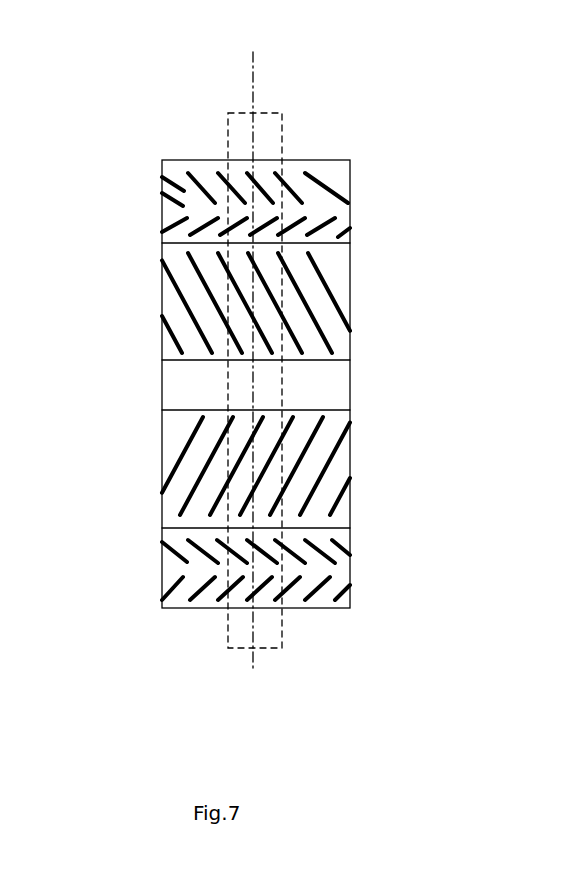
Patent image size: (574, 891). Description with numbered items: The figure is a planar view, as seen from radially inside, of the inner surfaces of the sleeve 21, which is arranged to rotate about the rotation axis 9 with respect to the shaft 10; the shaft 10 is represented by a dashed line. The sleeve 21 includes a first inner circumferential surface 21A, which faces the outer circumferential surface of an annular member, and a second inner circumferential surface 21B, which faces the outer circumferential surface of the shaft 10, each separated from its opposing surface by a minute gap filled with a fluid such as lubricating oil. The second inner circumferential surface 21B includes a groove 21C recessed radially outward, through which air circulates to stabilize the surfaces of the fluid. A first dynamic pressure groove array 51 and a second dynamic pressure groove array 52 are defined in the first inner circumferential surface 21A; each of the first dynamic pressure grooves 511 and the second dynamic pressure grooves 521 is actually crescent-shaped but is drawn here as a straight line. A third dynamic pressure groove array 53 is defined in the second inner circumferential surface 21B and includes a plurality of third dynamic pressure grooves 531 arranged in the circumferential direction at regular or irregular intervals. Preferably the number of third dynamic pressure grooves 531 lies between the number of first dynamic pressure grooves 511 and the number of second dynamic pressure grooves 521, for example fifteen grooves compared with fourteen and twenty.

The rotation axis 9 is at (257, 56).
The shaft 10 is at (237, 113).
The sleeve 21 is at (346, 158).
The first inner circumferential surface 21A is at (163, 168).
The second inner circumferential surface 21B is at (168, 303).
The groove 21C is at (165, 385).
The first dynamic pressure groove array 51 is at (349, 242).
The first dynamic pressure groove 511 is at (345, 555).
The second dynamic pressure groove array 52 is at (339, 184).
The second dynamic pressure groove 521 is at (305, 175).
The third dynamic pressure groove array 53 is at (337, 286).
The third dynamic pressure groove 531 is at (352, 318).